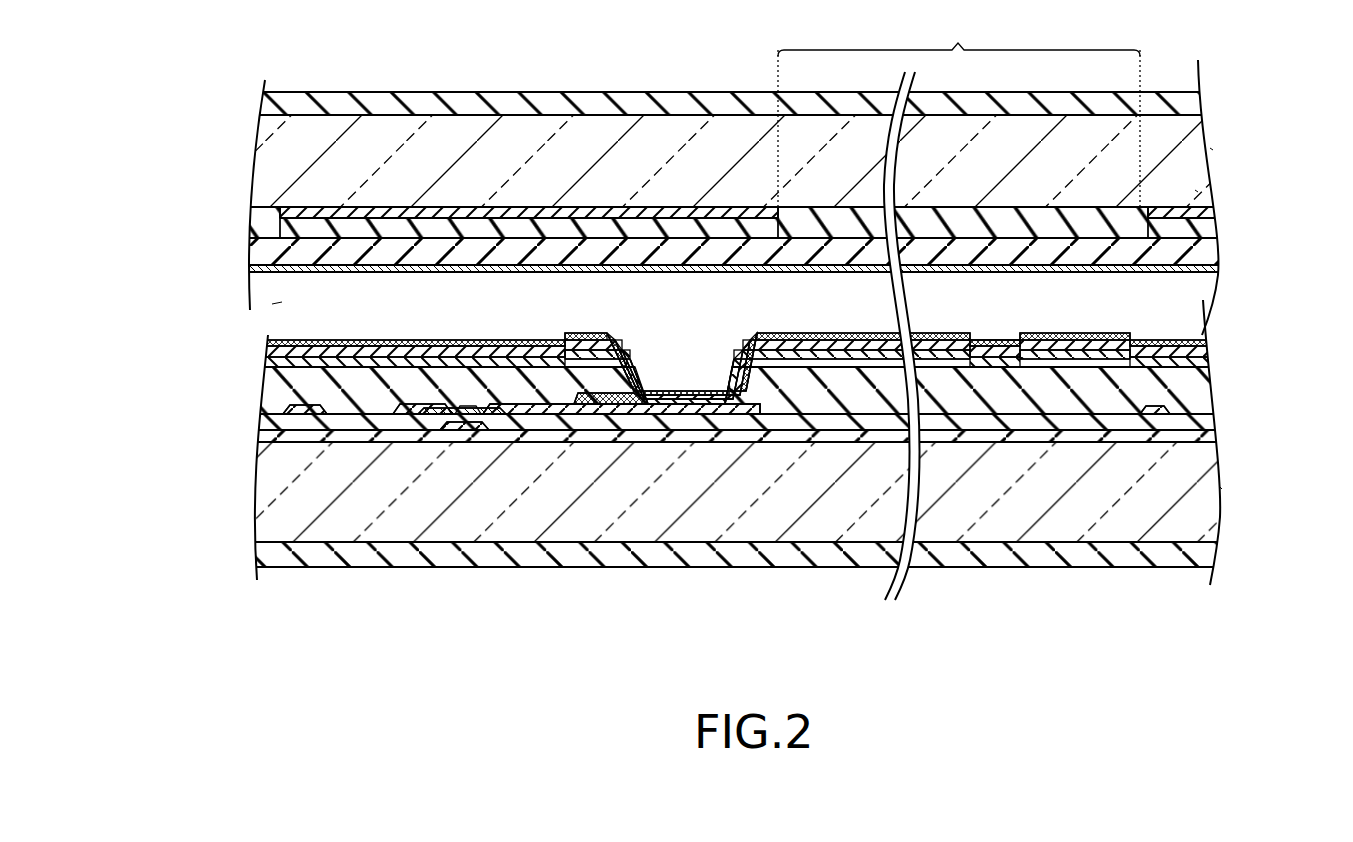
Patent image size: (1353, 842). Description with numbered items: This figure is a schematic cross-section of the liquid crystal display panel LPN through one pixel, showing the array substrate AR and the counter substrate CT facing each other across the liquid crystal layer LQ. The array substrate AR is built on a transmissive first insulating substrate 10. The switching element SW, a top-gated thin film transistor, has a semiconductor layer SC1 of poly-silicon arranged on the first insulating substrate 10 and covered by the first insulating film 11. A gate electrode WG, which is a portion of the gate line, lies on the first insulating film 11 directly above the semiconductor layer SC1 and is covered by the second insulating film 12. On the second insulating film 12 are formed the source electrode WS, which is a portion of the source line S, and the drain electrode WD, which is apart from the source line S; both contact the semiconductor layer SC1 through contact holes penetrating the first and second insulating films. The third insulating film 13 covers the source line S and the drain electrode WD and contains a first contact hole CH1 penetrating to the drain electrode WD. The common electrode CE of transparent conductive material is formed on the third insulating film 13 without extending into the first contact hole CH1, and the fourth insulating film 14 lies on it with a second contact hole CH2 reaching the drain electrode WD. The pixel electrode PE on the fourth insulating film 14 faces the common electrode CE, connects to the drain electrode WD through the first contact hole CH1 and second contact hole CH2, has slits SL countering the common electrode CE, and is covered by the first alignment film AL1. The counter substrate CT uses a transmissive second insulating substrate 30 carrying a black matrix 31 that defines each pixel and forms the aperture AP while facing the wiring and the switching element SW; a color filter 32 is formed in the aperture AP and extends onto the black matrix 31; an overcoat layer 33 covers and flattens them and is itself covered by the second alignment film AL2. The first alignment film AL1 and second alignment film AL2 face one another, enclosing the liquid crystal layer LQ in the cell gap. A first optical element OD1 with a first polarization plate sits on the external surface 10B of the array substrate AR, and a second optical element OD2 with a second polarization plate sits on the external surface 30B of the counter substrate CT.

The second insulating substrate 30 is at (272, 158).
The black matrix 31 is at (278, 215).
The color filter 32 is at (272, 233).
The overcoat layer 33 is at (270, 255).
The second alignment film AL2 is at (268, 270).
The liquid crystal layer LQ is at (272, 304).
The first alignment film AL1 is at (286, 342).
The fourth insulating film 14 is at (272, 352).
The third insulating film 13 is at (280, 388).
The second insulating film 12 is at (277, 421).
The first insulating film 11 is at (270, 437).
The source line S is at (300, 414).
The first insulating substrate 10 is at (272, 520).
The source electrode WS is at (432, 406).
The drain electrode WD is at (526, 406).
The first contact hole CH1 is at (621, 352).
The second contact hole CH2 is at (660, 392).
The pixel electrode PE is at (746, 335).
The slits SL is at (995, 340).
The common electrode CE is at (1128, 340).
The switching element SW is at (440, 458).
The semiconductor layer SC1 is at (468, 432).
The gate electrode WG is at (490, 440).
The aperture AP is at (959, 113).
The external surface of the counter substrate 30B is at (1173, 100).
The second optical element OD2 is at (1200, 100).
The liquid crystal display panel LPN is at (1216, 148).
The counter substrate CT is at (1202, 190).
The array substrate AR is at (1227, 488).
The first optical element OD1 is at (1200, 558).
The external surface of the array substrate 10B is at (1168, 558).